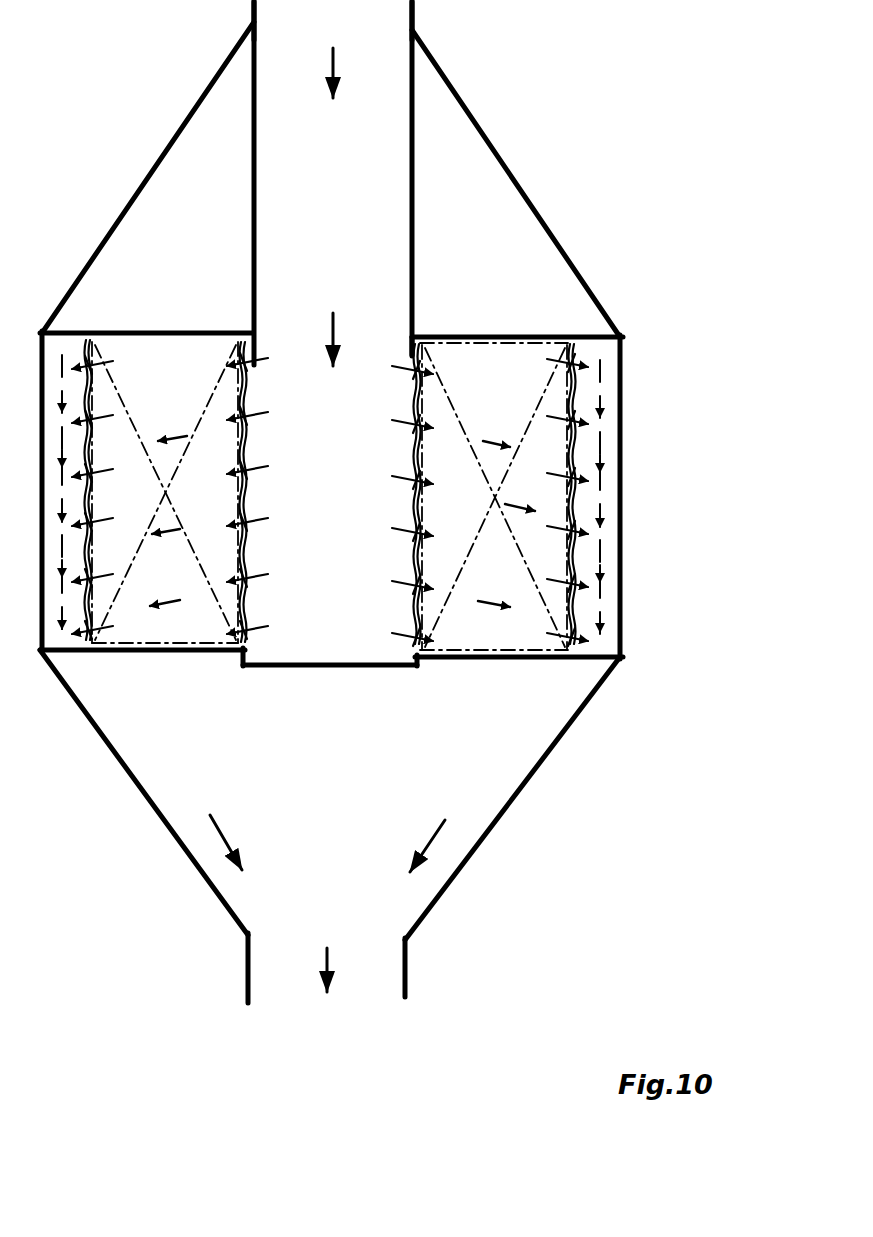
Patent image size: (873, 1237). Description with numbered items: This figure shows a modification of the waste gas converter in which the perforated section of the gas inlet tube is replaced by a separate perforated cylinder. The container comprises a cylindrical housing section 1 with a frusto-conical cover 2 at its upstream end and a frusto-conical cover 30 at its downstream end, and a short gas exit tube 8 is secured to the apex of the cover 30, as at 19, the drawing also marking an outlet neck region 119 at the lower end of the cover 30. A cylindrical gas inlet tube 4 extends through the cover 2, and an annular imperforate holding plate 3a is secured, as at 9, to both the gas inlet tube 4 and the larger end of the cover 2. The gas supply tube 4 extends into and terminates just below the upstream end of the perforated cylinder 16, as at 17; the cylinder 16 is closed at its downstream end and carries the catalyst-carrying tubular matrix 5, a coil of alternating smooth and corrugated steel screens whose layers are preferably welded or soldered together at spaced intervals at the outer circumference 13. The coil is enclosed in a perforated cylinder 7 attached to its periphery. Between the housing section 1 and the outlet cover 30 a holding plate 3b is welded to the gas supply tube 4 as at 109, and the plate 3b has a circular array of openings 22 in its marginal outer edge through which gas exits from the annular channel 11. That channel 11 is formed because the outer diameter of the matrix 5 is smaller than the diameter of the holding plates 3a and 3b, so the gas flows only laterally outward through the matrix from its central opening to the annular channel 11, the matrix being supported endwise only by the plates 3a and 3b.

The cylindrical housing section 1 is at (625, 415).
The frusto-conical cover 2 is at (447, 75).
The annular imperforate holding plate 3a is at (522, 335).
The holding plate 3b is at (530, 660).
The gas inlet tube 4 is at (415, 128).
The tubular matrix 5 is at (515, 372).
The perforated cylinder 7 is at (578, 612).
The gas exit tube 8 is at (407, 990).
The weld at transition 9 is at (415, 333).
The annular flow channel 11 is at (585, 468).
The outer circumference of the coil 13 is at (424, 556).
The perforated cylinder 16 is at (333, 656).
The termination of gas supply tube 17 is at (406, 352).
The securing point of exit tube 19 is at (415, 28).
The openings 22 is at (622, 648).
The frusto-conical cover 30 is at (583, 705).
The weld of holding plate to tube 109 is at (420, 666).
The outlet neck 119 is at (407, 940).